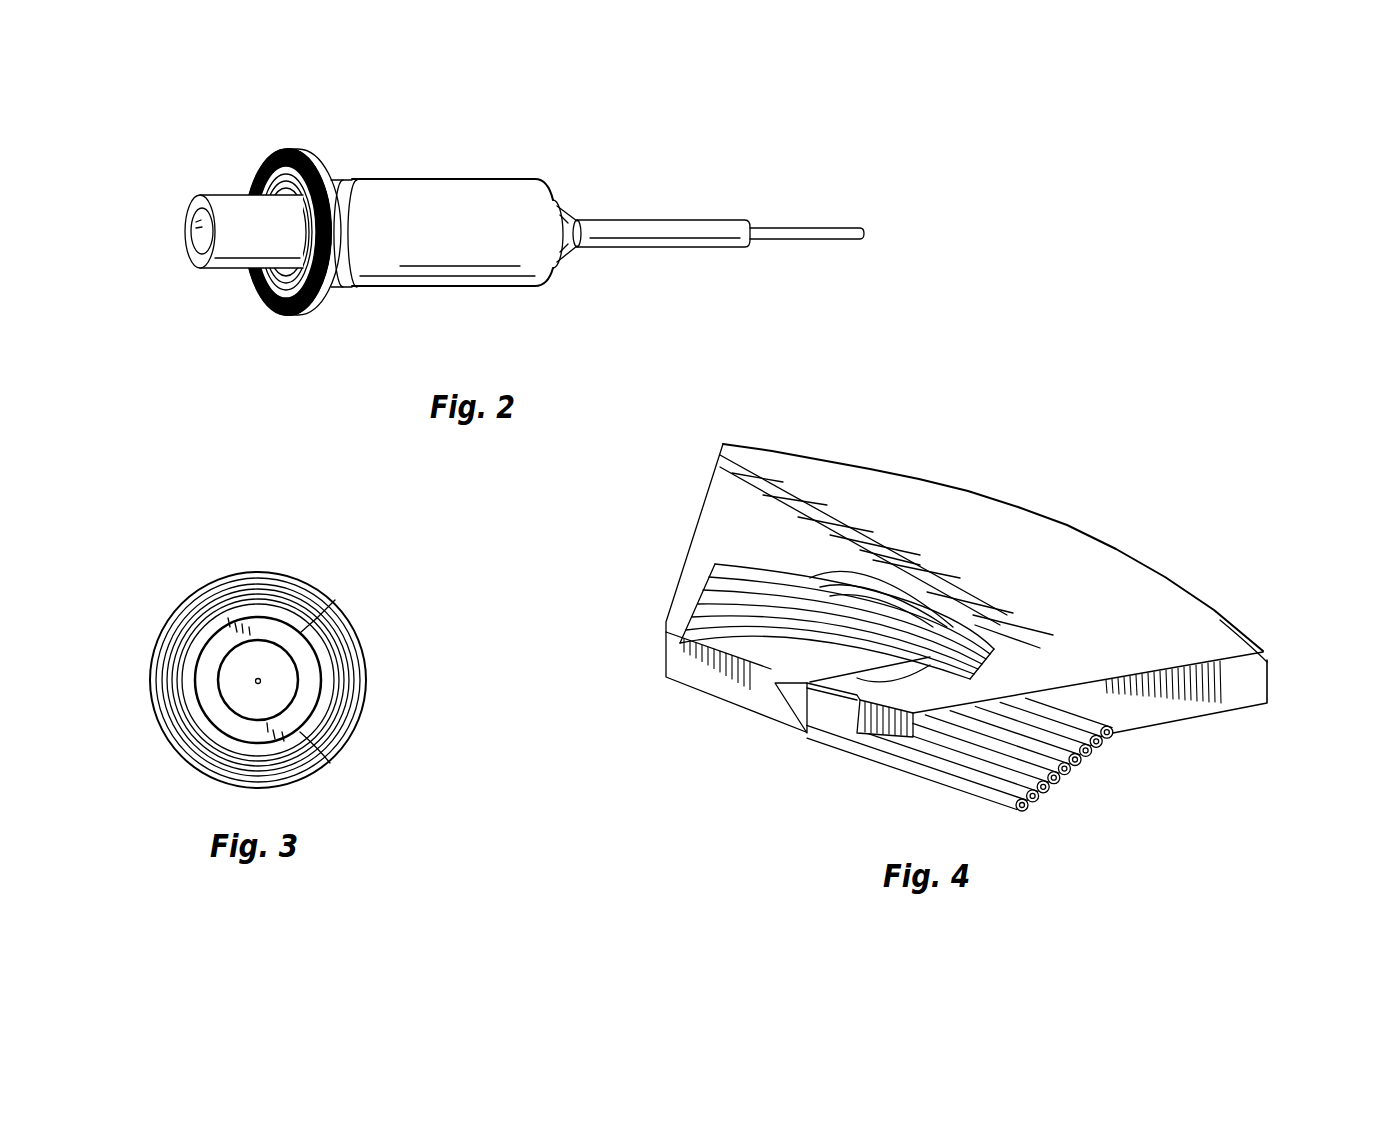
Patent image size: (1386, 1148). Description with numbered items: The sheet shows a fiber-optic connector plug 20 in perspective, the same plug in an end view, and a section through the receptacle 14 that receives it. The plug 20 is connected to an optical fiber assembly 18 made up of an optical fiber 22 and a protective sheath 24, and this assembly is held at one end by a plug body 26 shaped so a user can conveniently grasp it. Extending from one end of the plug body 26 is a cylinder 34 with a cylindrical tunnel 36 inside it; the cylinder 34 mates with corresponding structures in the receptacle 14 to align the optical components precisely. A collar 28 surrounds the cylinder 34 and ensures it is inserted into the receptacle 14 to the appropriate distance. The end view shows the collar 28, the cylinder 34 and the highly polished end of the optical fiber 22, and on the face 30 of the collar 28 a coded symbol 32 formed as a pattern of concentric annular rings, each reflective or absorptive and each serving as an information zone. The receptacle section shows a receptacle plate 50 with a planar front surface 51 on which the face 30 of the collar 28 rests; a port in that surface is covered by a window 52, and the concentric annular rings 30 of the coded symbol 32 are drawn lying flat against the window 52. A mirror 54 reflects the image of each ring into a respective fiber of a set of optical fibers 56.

In FIG. 4, the receptacle 14 is at (993, 477).
In FIG. 2, the optical fiber assembly 18 is at (685, 204).
In FIG. 2, the fiber-optic connector plug 20 is at (422, 140).
In FIG. 2, the optical fiber 22 is at (820, 227).
In FIG. 3, the optical fiber 22 is at (260, 679).
In FIG. 2, the protective sheath 24 is at (662, 232).
In FIG. 2, the plug body 26 is at (465, 202).
In FIG. 2, the collar 28 is at (310, 157).
In FIG. 3, the collar 28 is at (367, 653).
In FIG. 2, the face of the collar 30 is at (267, 307).
In FIG. 3, the face of the collar 30 is at (305, 603).
In FIG. 4, the face of the collar 30 is at (733, 607).
In FIG. 2, the coded symbol 32 is at (273, 153).
In FIG. 3, the coded symbol 32 is at (180, 607).
In FIG. 2, the cylinder 34 is at (238, 248).
In FIG. 3, the cylinder 34 is at (300, 730).
In FIG. 2, the cylindrical tunnel 36 is at (193, 240).
In FIG. 3, the cylindrical tunnel 36 is at (287, 683).
In FIG. 4, the receptacle plate 50 is at (1268, 682).
In FIG. 4, the planar front surface 51 is at (1160, 593).
In FIG. 4, the window 52 is at (883, 669).
In FIG. 4, the mirror 54 is at (796, 695).
In FIG. 4, the set of optical fibers 56 is at (1035, 821).